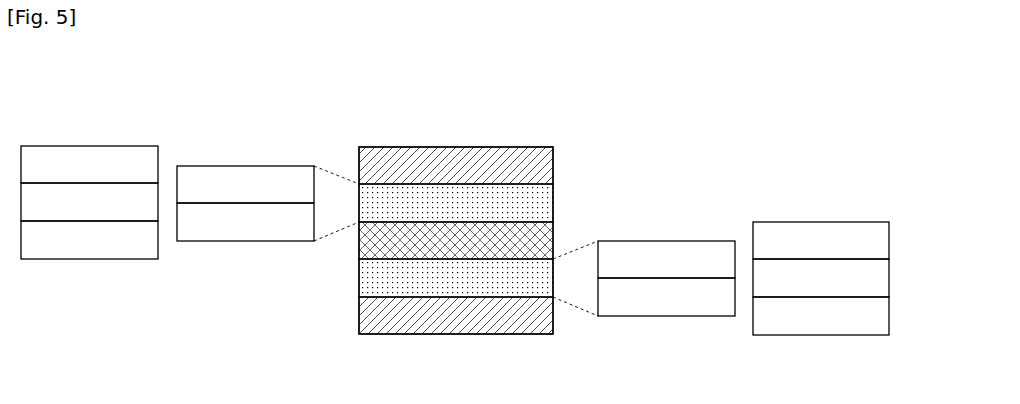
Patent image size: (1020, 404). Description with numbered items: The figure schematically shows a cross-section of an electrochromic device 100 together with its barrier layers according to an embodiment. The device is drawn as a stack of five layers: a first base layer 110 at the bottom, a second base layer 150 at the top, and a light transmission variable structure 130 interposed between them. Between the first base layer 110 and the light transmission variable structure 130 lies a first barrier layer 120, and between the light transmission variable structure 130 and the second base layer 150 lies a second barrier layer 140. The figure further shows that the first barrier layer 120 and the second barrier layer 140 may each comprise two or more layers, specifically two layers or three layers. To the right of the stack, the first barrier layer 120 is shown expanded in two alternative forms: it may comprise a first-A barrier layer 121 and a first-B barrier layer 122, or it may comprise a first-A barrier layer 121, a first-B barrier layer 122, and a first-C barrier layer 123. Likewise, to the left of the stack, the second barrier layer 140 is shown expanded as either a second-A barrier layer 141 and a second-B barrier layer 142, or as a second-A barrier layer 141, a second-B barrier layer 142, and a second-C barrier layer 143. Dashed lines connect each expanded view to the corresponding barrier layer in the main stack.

The electrochromic device 100 is at (489, 97).
The first base layer 110 is at (456, 315).
The first barrier layer 120 is at (456, 278).
The first-A barrier layer 121 is at (743, 306).
The first-B barrier layer 122 is at (743, 269).
The first-C barrier layer 123 is at (821, 240).
The light transmission variable structure 130 is at (456, 240).
The second barrier layer 140 is at (456, 203).
The second-A barrier layer 141 is at (167, 174).
The second-B barrier layer 142 is at (167, 212).
The second-C barrier layer 143 is at (89, 240).
The second base layer 150 is at (456, 165).